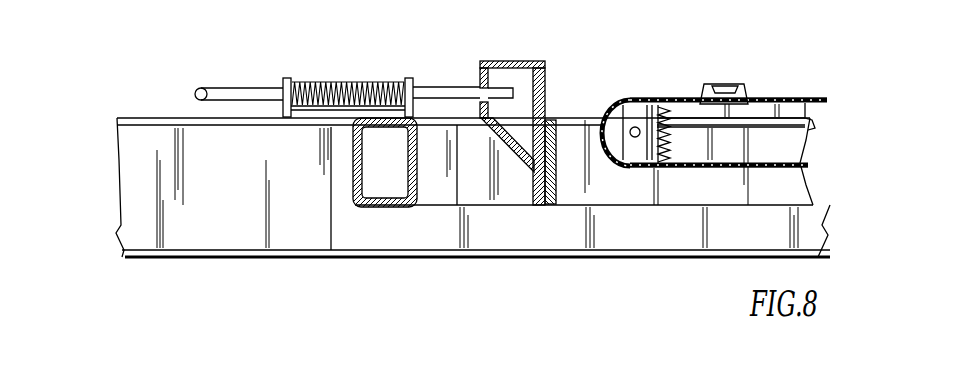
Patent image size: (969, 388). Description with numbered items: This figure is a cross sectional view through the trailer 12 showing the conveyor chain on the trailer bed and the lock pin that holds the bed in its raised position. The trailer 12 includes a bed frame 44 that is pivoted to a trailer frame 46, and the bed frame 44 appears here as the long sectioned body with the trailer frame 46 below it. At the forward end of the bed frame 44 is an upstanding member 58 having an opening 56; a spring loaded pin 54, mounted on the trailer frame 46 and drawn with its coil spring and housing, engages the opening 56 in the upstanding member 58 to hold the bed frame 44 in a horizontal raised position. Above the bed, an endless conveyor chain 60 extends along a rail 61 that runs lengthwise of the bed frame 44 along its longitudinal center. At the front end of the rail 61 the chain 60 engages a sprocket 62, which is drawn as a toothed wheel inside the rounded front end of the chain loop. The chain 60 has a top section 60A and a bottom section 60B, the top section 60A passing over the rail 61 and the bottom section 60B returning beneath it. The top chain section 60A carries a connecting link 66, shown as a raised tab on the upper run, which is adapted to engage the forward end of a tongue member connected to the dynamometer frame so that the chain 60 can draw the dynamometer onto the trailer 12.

The trailer 12 is at (230, 263).
The bed frame 44 is at (555, 188).
The trailer frame 46 is at (427, 193).
The spring loaded pin 54 is at (243, 92).
The opening 56 is at (490, 92).
The upstanding member 58 is at (523, 60).
The endless conveyor chain 60 is at (781, 95).
The top section 60A is at (677, 100).
The bottom section 60B is at (777, 168).
The rail 61 is at (762, 108).
The sprocket 62 is at (643, 107).
The connecting link 66 is at (737, 87).